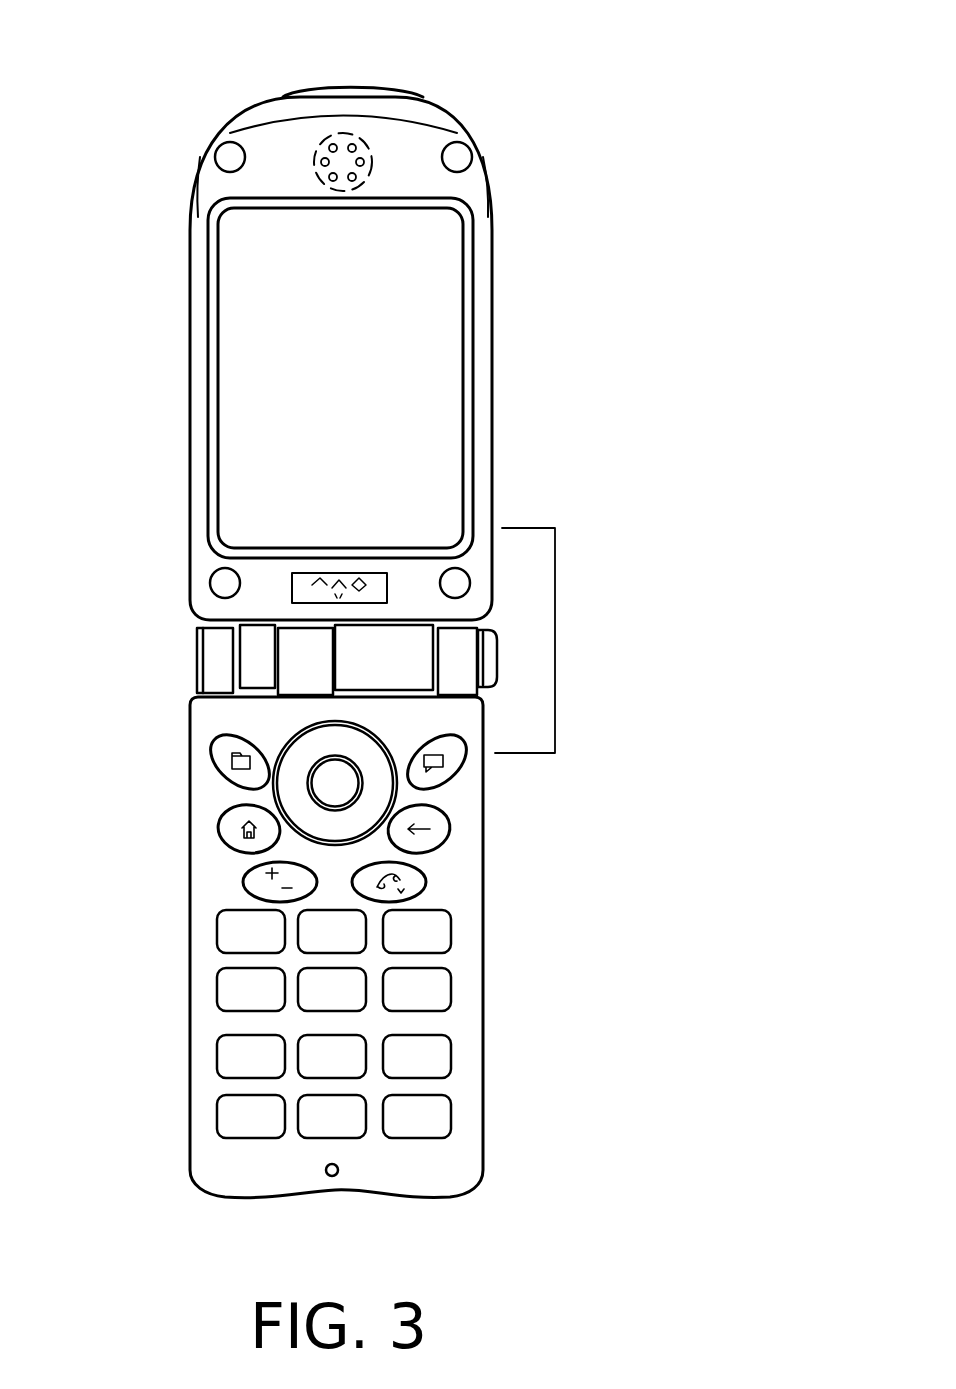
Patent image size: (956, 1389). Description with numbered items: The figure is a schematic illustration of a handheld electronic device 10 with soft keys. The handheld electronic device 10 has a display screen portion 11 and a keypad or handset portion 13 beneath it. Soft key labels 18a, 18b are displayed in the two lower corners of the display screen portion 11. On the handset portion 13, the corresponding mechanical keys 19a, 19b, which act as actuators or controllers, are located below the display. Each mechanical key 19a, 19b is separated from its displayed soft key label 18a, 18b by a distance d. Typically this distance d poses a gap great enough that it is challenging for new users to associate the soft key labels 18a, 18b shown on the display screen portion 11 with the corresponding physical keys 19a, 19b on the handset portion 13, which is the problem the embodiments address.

The handheld electronic device 10 is at (375, 602).
The display screen portion 11 is at (311, 378).
The keypad or handset portion 13 is at (483, 885).
The soft key label 18a is at (194, 528).
The soft key label 18b is at (460, 510).
The mechanical key 19a is at (214, 768).
The mechanical key 19b is at (453, 775).
The distance d is at (543, 640).